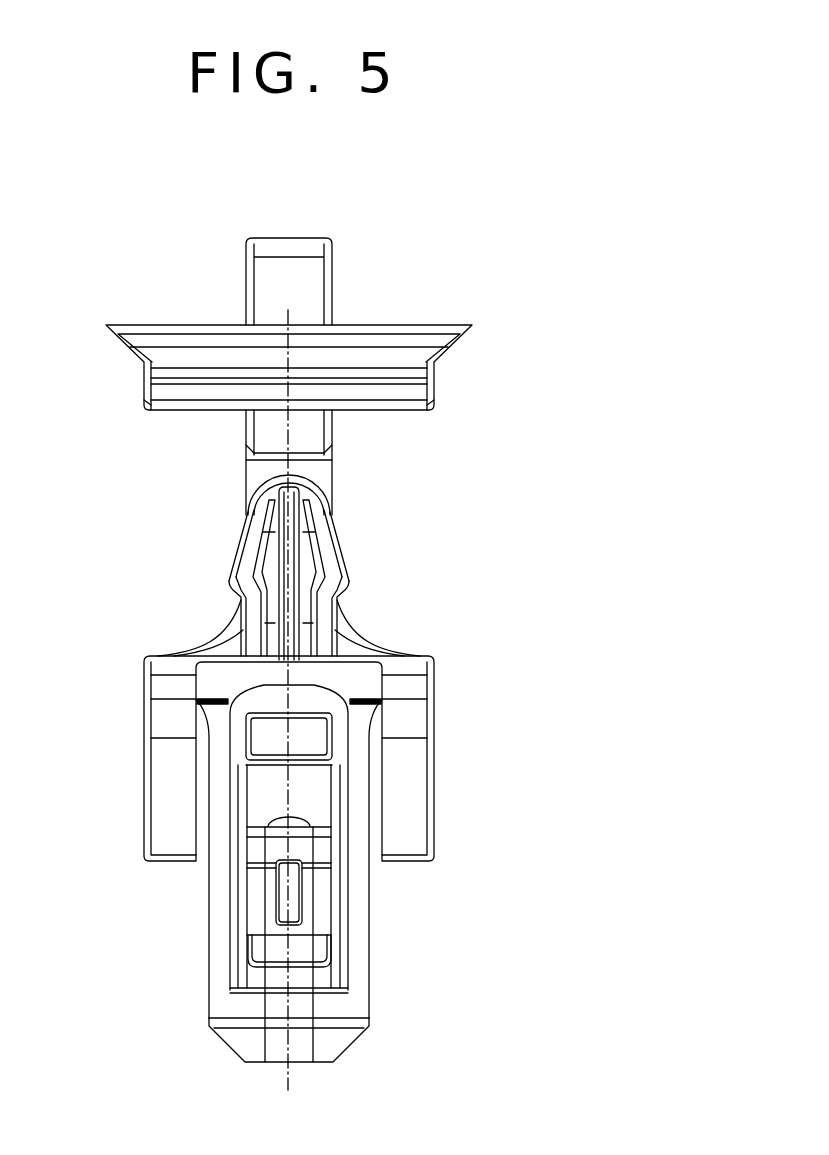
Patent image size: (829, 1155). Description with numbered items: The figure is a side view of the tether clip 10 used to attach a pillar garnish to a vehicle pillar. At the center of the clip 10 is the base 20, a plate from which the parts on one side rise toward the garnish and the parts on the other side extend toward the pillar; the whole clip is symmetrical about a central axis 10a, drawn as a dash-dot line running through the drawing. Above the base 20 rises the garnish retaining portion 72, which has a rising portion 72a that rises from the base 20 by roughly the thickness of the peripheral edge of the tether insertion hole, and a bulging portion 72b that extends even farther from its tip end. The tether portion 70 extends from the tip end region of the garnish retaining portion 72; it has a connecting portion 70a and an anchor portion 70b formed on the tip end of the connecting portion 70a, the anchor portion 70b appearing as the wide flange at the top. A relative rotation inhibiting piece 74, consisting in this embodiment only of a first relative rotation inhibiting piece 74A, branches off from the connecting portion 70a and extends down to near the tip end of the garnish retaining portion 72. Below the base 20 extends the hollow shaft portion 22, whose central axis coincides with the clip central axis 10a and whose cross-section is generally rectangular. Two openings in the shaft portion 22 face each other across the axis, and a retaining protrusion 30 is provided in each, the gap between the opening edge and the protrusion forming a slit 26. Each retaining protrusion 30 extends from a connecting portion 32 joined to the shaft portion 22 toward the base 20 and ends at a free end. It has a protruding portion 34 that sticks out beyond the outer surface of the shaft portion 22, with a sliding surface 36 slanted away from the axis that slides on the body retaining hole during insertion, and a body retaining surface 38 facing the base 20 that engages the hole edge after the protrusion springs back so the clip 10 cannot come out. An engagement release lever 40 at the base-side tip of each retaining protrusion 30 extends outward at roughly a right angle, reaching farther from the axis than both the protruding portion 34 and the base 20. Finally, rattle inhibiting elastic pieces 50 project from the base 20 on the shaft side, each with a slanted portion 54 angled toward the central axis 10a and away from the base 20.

The tether clip 10 is at (424, 647).
The central axis 10a is at (292, 1065).
The base 20 is at (348, 667).
The shaft portion 22 is at (210, 967).
The slit 26 is at (337, 681).
The retaining protrusion 30 is at (440, 872).
The connecting portion 32 is at (337, 965).
The protruding portion 34 is at (295, 843).
The sliding surface 36 is at (300, 935).
The body retaining surface 38 is at (338, 780).
The engagement release lever 40 is at (302, 745).
The rattle inhibiting elastic piece 50 is at (413, 832).
The slanted portion 54 is at (412, 757).
The tether portion 70 is at (135, 228).
The connecting portion 70a is at (268, 268).
The anchor portion 70b is at (217, 338).
The garnish retaining portion 72 is at (136, 507).
The rising portion 72a is at (237, 610).
The bulging portion 72b is at (230, 563).
The relative rotation inhibiting piece 74 is at (368, 462).
The first relative rotation inhibiting piece 74A is at (312, 435).